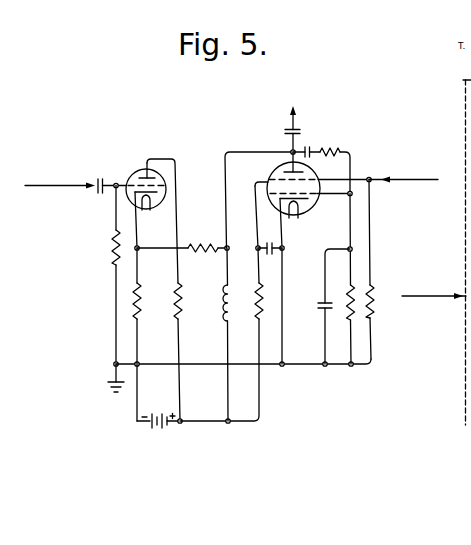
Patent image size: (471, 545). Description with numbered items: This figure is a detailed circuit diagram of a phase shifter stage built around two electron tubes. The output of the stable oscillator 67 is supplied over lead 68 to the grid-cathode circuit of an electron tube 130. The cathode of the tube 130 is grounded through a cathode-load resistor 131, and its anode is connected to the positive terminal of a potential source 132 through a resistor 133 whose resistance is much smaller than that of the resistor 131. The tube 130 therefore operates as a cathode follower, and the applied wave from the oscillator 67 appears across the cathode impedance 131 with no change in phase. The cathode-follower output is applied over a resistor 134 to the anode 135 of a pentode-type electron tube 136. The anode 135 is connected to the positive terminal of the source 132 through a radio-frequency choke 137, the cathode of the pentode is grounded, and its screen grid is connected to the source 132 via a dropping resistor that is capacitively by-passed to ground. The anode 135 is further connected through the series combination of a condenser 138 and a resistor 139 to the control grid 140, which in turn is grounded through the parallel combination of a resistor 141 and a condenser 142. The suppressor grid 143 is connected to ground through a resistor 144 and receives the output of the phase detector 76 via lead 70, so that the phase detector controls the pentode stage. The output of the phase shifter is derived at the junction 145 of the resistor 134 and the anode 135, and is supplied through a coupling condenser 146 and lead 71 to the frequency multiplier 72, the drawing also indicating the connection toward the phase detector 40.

The phase detector 40 is at (433, 304).
The stable oscillator 67 is at (54, 191).
The lead 68 is at (97, 179).
The lead 70 is at (369, 177).
The lead 71 is at (294, 119).
The frequency multiplier 72 is at (295, 94).
The phase detector 76 is at (404, 194).
The electron tube 130 is at (146, 169).
The cathode-load resistor 131 is at (141, 294).
The potential source 132 is at (160, 428).
The resistor 133 is at (182, 292).
The resistor 134 is at (201, 244).
The anode 135 is at (283, 167).
The pentode-type electron tube 136 is at (318, 169).
The radio-frequency choke 137 is at (223, 307).
The condenser 138 is at (306, 147).
The resistor 139 is at (335, 150).
The control grid 140 is at (311, 203).
The resistor 141 is at (347, 292).
The condenser 142 is at (318, 305).
The suppressor grid 143 is at (258, 172).
The resistor 144 is at (377, 285).
The junction 145 is at (290, 150).
The coupling condenser 146 is at (285, 132).